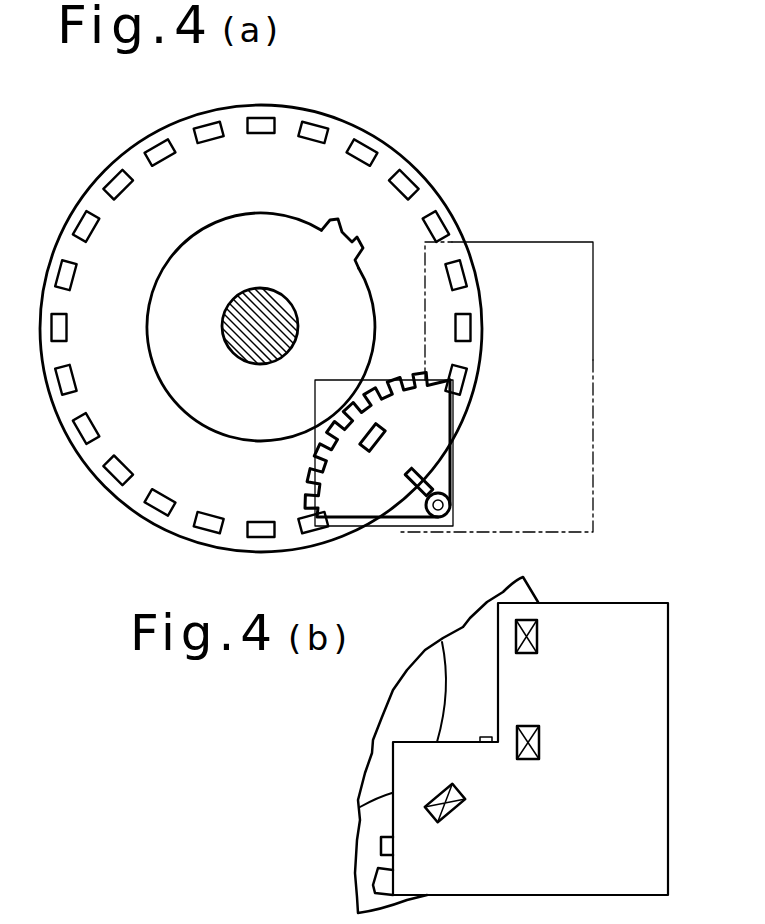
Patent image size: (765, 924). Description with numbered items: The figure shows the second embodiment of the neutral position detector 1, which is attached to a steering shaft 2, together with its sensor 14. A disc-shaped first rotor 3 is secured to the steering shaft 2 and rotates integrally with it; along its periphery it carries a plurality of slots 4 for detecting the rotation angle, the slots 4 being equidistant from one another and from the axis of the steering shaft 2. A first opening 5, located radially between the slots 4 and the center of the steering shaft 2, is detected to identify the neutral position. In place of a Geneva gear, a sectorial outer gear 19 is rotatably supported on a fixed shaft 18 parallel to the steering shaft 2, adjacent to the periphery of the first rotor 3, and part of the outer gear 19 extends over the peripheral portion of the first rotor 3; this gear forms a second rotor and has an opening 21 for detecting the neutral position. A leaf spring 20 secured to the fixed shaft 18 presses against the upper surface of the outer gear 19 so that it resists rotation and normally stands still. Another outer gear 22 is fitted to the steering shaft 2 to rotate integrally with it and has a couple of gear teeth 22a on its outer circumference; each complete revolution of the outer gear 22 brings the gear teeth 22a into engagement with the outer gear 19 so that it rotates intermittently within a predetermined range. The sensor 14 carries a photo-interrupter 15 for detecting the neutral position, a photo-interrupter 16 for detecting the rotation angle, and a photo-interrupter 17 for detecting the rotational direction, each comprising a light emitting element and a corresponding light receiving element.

In FIG. 4A, the neutral position detector 1 is at (534, 347).
In FIG. 4A, the steering shaft 2 is at (297, 307).
In FIG. 4A, the first rotor 3 is at (433, 187).
In FIG. 4B, the first rotor 3 is at (536, 588).
In FIG. 4A, the slots 4 is at (470, 322).
In FIG. 4A, the first opening 5 is at (383, 432).
In FIG. 4A, the sensor 14 is at (594, 366).
In FIG. 4B, the sensor 14 is at (669, 762).
In FIG. 4B, the photo-interrupter 15 is at (455, 815).
In FIG. 4B, the photo-interrupter 16 is at (539, 636).
In FIG. 4B, the photo-interrupter 17 is at (541, 742).
In FIG. 4A, the fixed shaft 18 is at (450, 503).
In FIG. 4A, the sectorial outer gear 19 is at (390, 508).
In FIG. 4A, the leaf spring 20 is at (440, 466).
In FIG. 4A, the opening 21 is at (363, 452).
In FIG. 4A, the outer gear 22 is at (176, 404).
In FIG. 4A, the gear teeth 22a is at (346, 218).